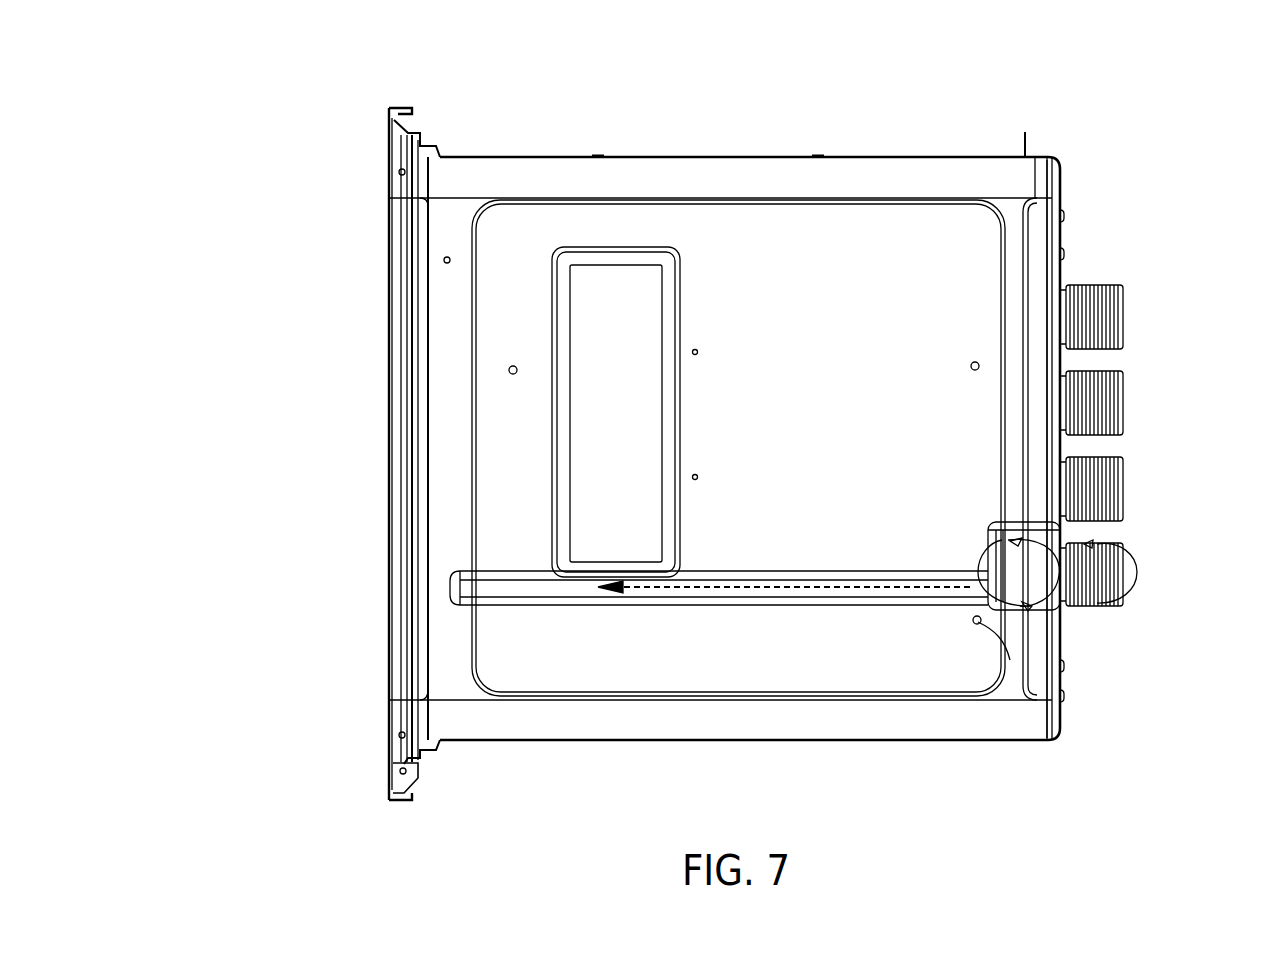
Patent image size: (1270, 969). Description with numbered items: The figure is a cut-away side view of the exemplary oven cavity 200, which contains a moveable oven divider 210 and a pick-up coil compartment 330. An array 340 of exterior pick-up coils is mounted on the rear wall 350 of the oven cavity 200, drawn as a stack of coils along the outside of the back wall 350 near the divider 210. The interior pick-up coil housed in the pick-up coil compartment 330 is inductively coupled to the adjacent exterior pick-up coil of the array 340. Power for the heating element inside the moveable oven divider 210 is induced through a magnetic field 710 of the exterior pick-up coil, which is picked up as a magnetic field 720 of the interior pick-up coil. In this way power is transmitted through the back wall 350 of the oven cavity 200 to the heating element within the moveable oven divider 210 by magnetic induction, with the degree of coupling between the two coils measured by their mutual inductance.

The oven cavity 200 is at (247, 101).
The moveable oven divider 210 is at (742, 570).
The pick-up coil compartment 330 is at (1023, 560).
The array of exterior pick-up coils 340 is at (1137, 275).
The rear wall 350 is at (1040, 232).
The magnetic field 710 is at (1100, 606).
The magnetic field 720 is at (1012, 622).